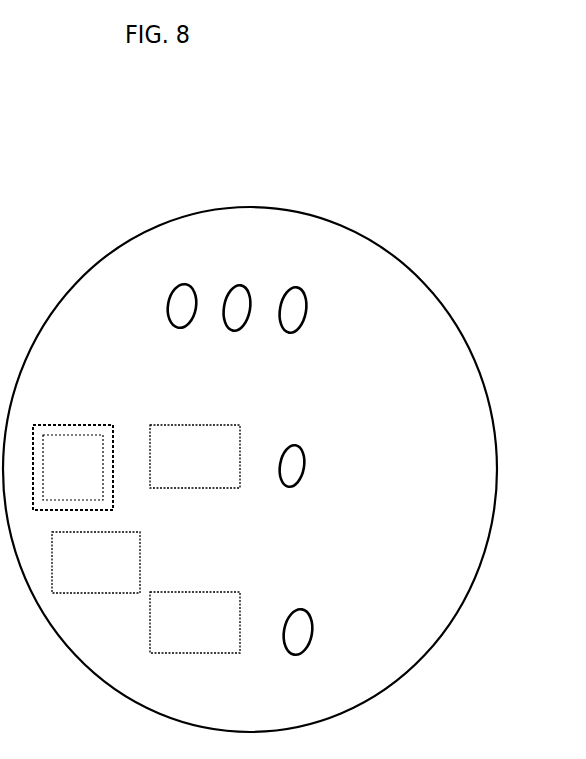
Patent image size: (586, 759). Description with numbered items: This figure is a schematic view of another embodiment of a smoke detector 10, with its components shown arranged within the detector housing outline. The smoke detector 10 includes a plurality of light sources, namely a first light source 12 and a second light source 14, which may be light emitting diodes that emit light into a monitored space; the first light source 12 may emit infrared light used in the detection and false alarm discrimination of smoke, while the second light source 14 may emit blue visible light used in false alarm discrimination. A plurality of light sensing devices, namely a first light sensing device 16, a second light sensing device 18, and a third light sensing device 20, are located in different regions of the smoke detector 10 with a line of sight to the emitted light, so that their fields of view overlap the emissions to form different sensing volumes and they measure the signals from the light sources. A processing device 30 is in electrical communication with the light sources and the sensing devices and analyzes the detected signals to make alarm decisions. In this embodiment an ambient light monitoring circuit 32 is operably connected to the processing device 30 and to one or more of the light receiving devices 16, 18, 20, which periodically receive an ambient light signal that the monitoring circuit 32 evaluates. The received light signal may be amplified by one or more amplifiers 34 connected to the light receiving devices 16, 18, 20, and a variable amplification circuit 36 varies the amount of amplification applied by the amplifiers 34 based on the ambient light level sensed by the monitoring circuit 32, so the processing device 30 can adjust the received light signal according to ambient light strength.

The smoke detector 10 is at (499, 268).
The first light source 12 is at (306, 305).
The second light source 14 is at (176, 329).
The first light sensing device 16 is at (312, 630).
The second light sensing device 18 is at (304, 462).
The third light sensing device 20 is at (238, 286).
The processing device 30 is at (73, 467).
The ambient light monitoring circuit 32 is at (201, 478).
The amplifier 34 is at (201, 640).
The variable amplification circuit 36 is at (104, 580).